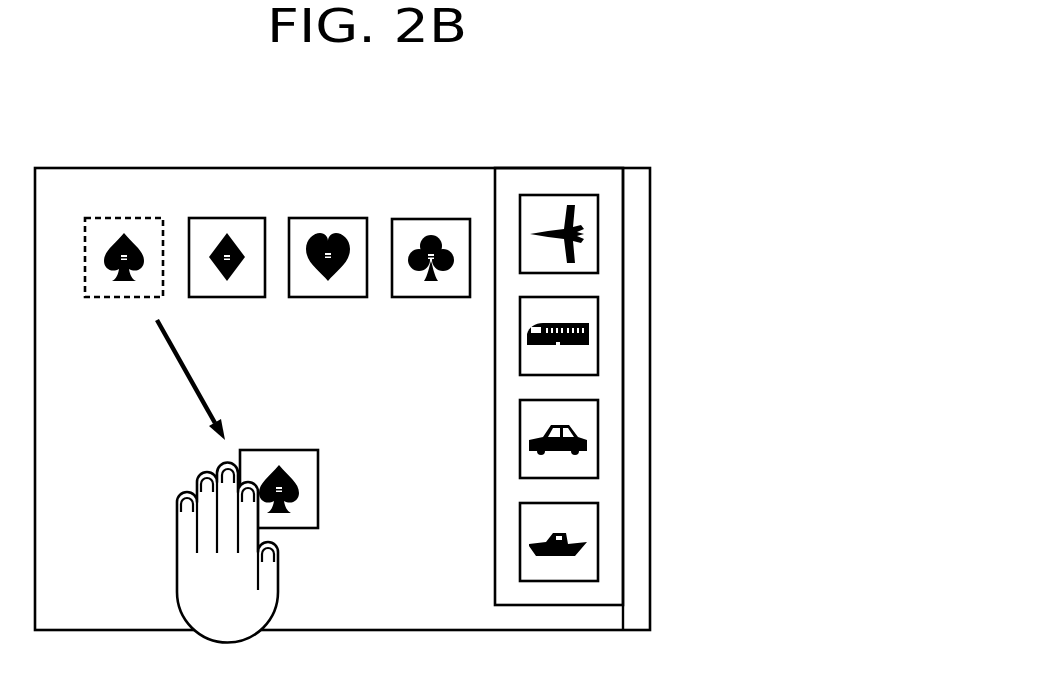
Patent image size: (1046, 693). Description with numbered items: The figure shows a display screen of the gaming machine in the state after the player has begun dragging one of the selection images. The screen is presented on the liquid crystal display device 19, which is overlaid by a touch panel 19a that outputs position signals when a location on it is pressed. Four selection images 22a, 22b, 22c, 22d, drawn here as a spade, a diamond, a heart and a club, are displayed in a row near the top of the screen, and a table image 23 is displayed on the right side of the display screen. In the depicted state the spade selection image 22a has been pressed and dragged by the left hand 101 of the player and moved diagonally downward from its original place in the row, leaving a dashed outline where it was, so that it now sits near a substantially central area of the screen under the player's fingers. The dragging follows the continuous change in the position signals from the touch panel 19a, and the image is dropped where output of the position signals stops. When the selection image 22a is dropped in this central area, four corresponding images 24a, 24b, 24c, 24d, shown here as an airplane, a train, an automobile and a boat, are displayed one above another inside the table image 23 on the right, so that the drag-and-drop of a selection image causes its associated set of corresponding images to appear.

The liquid crystal display device 19 is at (377, 351).
The touch panel 19a is at (634, 158).
The selection image 22a is at (318, 465).
The selection image 22b is at (225, 218).
The selection image 22c is at (327, 218).
The selection image 22d is at (433, 219).
The table image 23 is at (623, 367).
The corresponding image 24a is at (598, 226).
The corresponding image 24b is at (598, 322).
The corresponding image 24c is at (598, 435).
The corresponding image 24d is at (598, 532).
The left hand 101 is at (177, 580).